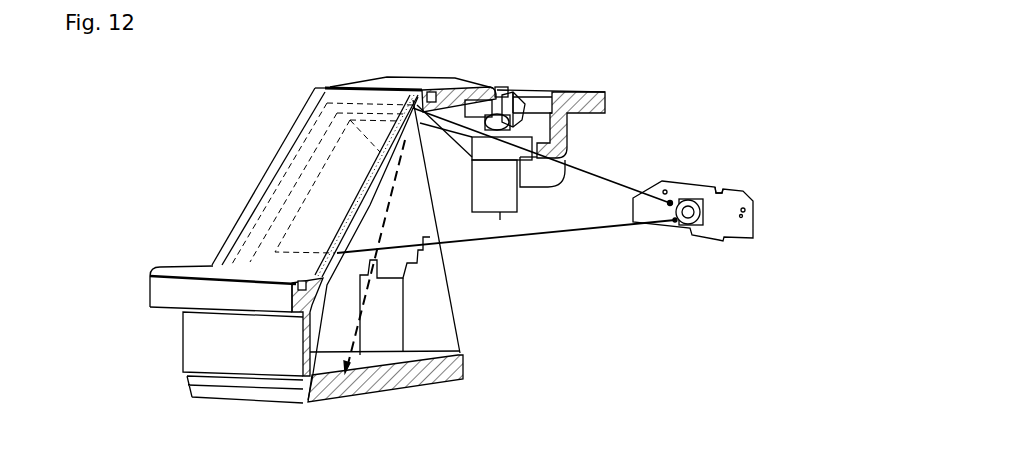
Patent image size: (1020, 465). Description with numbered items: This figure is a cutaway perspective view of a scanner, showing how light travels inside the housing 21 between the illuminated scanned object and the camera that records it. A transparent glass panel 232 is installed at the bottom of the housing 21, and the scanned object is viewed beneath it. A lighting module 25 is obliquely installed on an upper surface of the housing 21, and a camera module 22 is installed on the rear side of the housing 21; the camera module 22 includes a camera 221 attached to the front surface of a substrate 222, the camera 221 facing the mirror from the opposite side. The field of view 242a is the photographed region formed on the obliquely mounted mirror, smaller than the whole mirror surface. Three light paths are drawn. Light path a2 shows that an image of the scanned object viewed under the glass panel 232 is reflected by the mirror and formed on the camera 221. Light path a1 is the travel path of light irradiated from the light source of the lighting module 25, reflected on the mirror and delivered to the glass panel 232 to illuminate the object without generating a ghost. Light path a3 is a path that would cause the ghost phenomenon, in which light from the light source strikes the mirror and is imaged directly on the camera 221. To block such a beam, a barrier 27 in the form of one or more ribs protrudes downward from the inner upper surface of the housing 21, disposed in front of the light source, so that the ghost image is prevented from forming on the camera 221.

The field of view 242a is at (320, 171).
The light path a3 is at (447, 90).
The barrier 27 is at (498, 87).
The lighting module 25 is at (513, 92).
The camera module 22 is at (753, 148).
The camera 221 is at (689, 198).
The substrate 222 is at (723, 190).
The housing 21 is at (193, 342).
The light path a2 is at (333, 293).
The light path a1 is at (340, 322).
The glass panel 232 is at (390, 383).